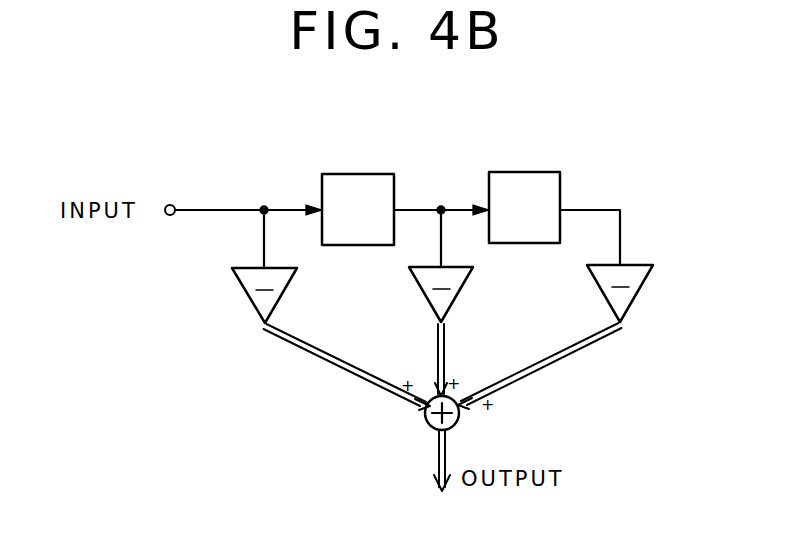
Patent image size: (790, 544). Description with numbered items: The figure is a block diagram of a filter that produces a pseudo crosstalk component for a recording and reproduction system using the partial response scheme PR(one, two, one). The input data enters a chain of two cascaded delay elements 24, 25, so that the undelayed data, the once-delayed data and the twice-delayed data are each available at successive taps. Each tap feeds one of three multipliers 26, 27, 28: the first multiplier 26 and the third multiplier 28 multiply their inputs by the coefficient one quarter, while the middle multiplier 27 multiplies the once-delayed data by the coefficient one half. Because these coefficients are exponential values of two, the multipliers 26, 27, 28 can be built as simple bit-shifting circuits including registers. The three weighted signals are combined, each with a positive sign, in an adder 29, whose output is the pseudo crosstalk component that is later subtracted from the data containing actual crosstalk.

The delay element 24 is at (362, 173).
The delay element 25 is at (525, 171).
The multiplier 26 is at (286, 289).
The multiplier 27 is at (464, 288).
The multiplier 28 is at (643, 285).
The adder 29 is at (460, 418).